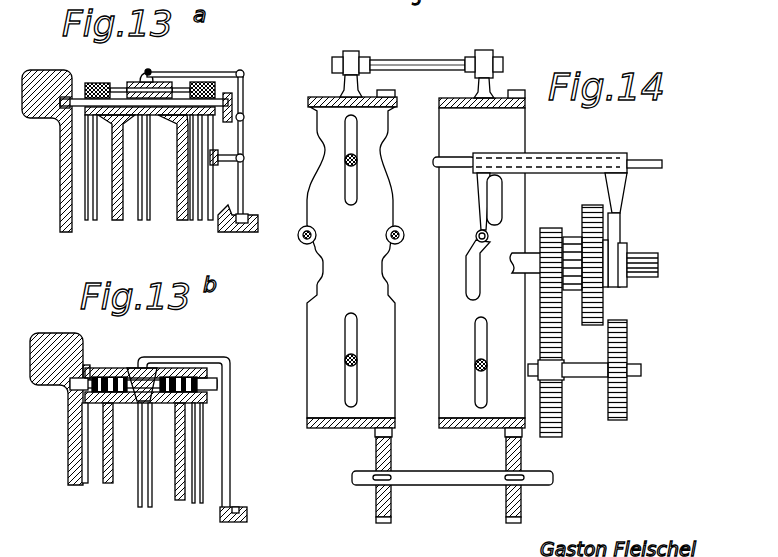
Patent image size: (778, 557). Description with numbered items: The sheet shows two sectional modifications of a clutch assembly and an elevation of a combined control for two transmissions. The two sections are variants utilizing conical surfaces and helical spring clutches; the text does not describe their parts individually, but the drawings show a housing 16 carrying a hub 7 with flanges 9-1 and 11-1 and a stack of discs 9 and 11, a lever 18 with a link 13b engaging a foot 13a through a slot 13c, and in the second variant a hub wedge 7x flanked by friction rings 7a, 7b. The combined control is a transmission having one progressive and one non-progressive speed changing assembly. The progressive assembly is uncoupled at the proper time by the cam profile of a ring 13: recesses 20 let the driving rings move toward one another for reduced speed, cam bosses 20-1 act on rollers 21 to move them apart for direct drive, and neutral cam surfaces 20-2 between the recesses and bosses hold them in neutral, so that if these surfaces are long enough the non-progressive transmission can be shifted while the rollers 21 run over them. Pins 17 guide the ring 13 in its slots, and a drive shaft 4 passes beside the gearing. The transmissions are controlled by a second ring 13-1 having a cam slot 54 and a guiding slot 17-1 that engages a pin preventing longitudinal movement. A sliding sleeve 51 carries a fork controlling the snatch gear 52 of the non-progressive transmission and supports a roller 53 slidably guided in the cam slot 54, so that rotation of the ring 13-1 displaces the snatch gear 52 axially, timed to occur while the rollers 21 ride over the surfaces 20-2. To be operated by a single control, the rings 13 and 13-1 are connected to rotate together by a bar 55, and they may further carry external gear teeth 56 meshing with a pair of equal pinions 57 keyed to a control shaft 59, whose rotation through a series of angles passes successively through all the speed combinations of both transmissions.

In FIG. 14, the drive shaft 4 is at (525, 263).
In FIG. 13A, the hub 7 is at (137, 82).
In FIG. 13B, the friction ring 7a is at (189, 377).
In FIG. 13B, the friction ring 7b is at (107, 369).
In FIG. 13B, the hub wedge 7x is at (134, 368).
In FIG. 13A, the driving disc 9 is at (115, 168).
In FIG. 13B, the driving disc 9 is at (102, 437).
In FIG. 13A, the disc flange 9-1 is at (97, 83).
In FIG. 13A, the driven disc 11 is at (177, 190).
In FIG. 13B, the driven disc 11 is at (175, 447).
In FIG. 13A, the disc flange 11-1 is at (203, 83).
In FIG. 14, the ring 13 is at (320, 174).
In FIG. 14, the ring 13-1 is at (525, 137).
In FIG. 13A, the foot 13a is at (227, 232).
In FIG. 13B, the foot 13a is at (247, 515).
In FIG. 13A, the link 13b is at (241, 172).
In FIG. 13A, the slot 13c is at (250, 214).
In FIG. 13B, the slot 13c is at (237, 507).
In FIG. 13A, the housing 16 is at (35, 75).
In FIG. 13B, the housing 16 is at (50, 352).
In FIG. 14, the guide pin 17 is at (348, 360).
In FIG. 14, the guiding slot 17-1 is at (481, 385).
In FIG. 13A, the lever 18 is at (178, 90).
In FIG. 14, the recesses 20 is at (378, 262).
In FIG. 14, the cam bosses 20-1 is at (394, 212).
In FIG. 14, the neutral cam surfaces 20-2 is at (391, 230).
In FIG. 14, the rollers 21 is at (398, 241).
In FIG. 14, the sliding sleeve 51 is at (588, 155).
In FIG. 14, the snatch gear 52 is at (598, 232).
In FIG. 14, the roller 53 is at (505, 229).
In FIG. 14, the cam slot 54 is at (500, 199).
In FIG. 14, the bar 55 is at (410, 62).
In FIG. 14, the gear teeth 56 is at (393, 433).
In FIG. 14, the pinions 57 is at (522, 503).
In FIG. 14, the control shaft 59 is at (453, 477).